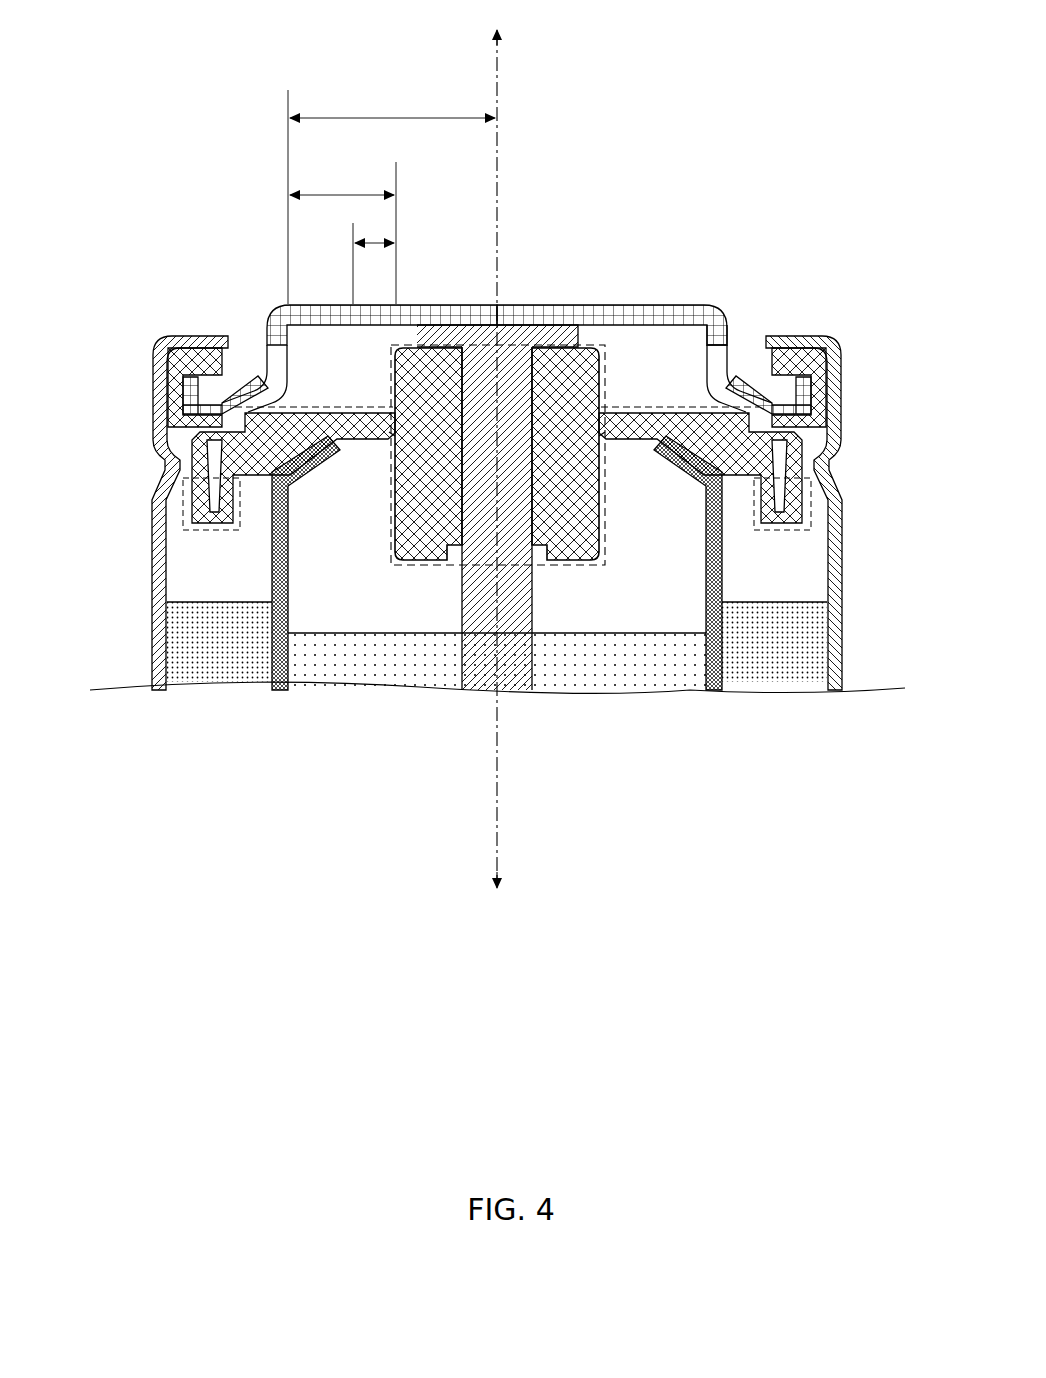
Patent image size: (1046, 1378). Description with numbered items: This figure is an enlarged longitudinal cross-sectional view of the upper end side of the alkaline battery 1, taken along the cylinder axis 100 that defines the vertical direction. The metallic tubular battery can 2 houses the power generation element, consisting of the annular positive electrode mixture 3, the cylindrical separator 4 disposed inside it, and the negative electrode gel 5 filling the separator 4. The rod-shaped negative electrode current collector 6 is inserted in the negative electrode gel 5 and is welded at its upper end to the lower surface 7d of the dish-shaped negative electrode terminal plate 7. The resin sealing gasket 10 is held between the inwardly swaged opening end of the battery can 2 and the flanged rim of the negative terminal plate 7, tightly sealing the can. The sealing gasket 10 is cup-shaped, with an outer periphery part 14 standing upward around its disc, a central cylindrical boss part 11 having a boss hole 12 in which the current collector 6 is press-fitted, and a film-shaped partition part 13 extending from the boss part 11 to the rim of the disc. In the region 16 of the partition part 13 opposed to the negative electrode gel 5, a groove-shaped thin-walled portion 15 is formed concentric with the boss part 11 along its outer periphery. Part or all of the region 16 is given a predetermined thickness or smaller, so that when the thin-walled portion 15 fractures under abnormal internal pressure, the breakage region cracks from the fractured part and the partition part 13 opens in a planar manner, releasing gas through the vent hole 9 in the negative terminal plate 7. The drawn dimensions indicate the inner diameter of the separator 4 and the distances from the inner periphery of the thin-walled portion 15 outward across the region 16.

The alkaline battery 1 is at (800, 150).
The battery can 2 is at (165, 338).
The positive electrode mixture 3 is at (185, 628).
The separator 4 is at (272, 560).
The negative electrode gel 5 is at (655, 665).
The negative electrode current collector 6 is at (485, 606).
The negative electrode terminal plate 7 is at (665, 307).
The lower surface 7d is at (680, 330).
The vent hole 9 is at (270, 358).
The sealing gasket 10 is at (557, 370).
The boss part 11 is at (607, 510).
The boss hole 12 is at (484, 368).
The partition part 13 is at (367, 304).
The outer periphery part 14 is at (158, 375).
The thin-walled portion 15 is at (390, 436).
The region opposed to the negative electrode gel 16 is at (345, 440).
The cylinder axis 100 is at (499, 166).